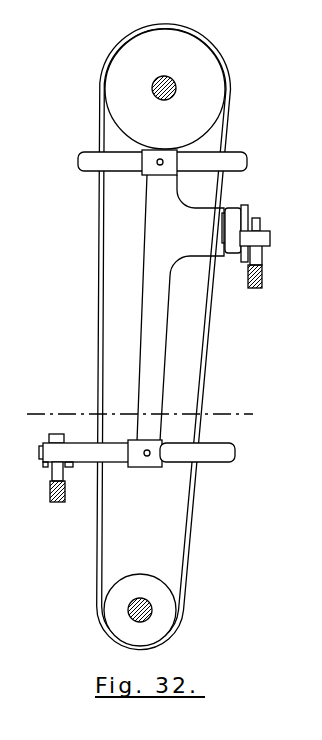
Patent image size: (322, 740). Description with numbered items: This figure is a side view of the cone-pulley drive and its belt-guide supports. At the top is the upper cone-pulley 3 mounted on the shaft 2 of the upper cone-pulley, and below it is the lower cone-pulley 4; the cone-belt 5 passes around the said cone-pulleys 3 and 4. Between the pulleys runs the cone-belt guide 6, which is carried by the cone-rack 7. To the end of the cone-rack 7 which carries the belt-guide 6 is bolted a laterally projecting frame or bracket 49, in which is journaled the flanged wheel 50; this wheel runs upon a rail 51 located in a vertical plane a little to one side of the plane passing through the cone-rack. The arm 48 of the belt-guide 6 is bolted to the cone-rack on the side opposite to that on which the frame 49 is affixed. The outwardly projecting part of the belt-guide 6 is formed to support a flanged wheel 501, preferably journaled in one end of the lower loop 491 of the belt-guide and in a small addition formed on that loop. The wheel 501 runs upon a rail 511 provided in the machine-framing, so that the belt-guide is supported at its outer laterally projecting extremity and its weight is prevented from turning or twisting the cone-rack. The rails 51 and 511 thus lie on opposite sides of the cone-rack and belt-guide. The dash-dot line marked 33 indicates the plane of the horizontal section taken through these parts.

The shaft of the upper cone-pulley 2 is at (177, 88).
The upper cone-pulley 3 is at (165, 89).
The lower cone-pulley 4 is at (140, 610).
The cone-belt 5 is at (99, 318).
The cone-belt guide 6 is at (153, 308).
The cone-rack 7 is at (232, 248).
The section line 33 is at (139, 415).
The arm of the belt-guide 48 is at (197, 225).
The frame or bracket 49 is at (248, 209).
The flanged wheel 50 is at (263, 226).
The rail 51 is at (264, 280).
The lower loop of the belt-guide 491 is at (86, 448).
The flanged wheel 501 is at (56, 471).
The rail 511 is at (49, 499).